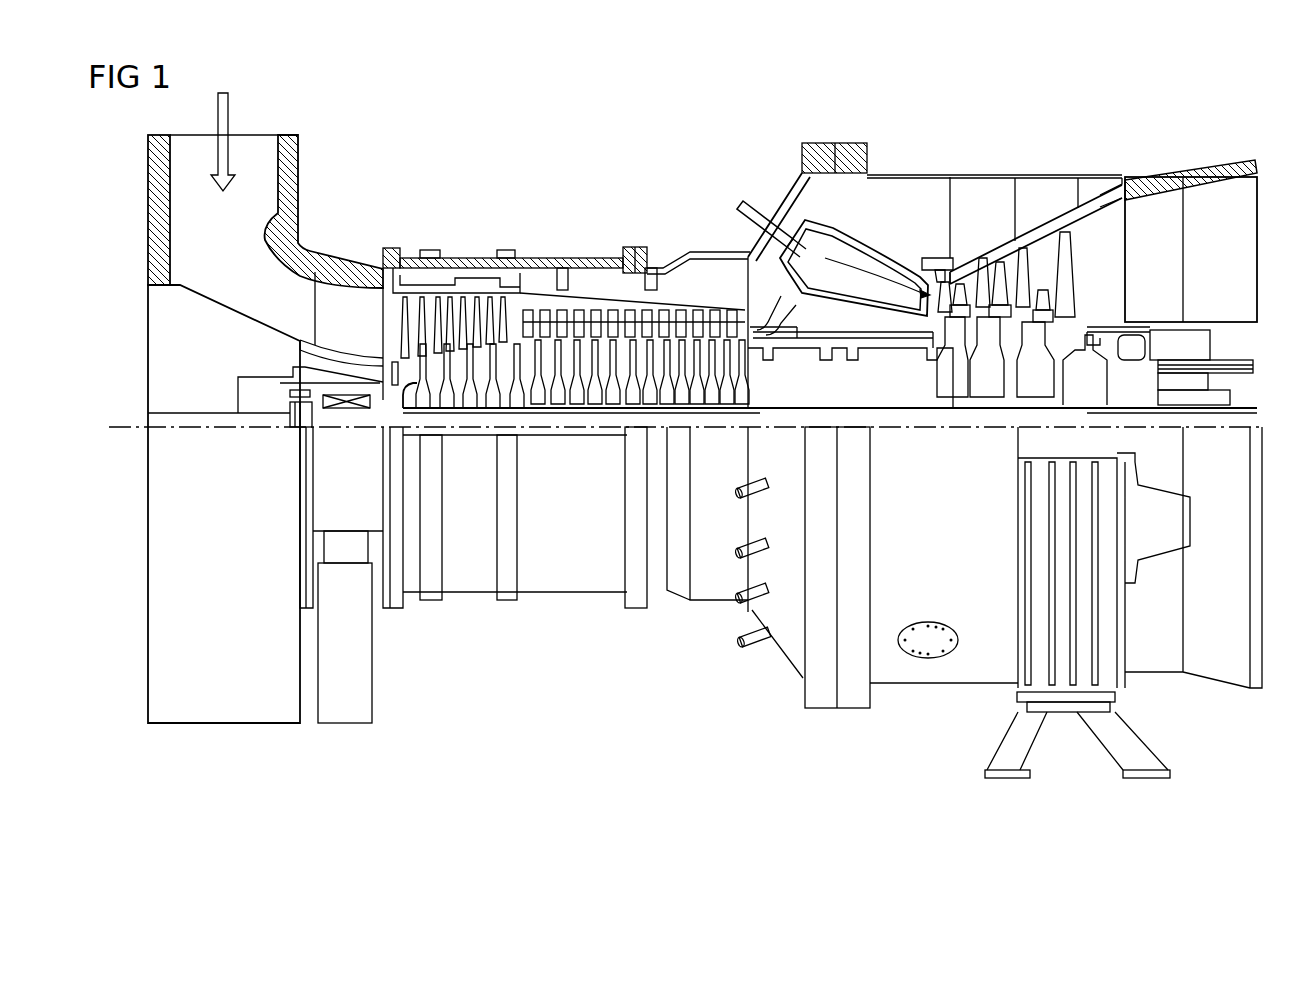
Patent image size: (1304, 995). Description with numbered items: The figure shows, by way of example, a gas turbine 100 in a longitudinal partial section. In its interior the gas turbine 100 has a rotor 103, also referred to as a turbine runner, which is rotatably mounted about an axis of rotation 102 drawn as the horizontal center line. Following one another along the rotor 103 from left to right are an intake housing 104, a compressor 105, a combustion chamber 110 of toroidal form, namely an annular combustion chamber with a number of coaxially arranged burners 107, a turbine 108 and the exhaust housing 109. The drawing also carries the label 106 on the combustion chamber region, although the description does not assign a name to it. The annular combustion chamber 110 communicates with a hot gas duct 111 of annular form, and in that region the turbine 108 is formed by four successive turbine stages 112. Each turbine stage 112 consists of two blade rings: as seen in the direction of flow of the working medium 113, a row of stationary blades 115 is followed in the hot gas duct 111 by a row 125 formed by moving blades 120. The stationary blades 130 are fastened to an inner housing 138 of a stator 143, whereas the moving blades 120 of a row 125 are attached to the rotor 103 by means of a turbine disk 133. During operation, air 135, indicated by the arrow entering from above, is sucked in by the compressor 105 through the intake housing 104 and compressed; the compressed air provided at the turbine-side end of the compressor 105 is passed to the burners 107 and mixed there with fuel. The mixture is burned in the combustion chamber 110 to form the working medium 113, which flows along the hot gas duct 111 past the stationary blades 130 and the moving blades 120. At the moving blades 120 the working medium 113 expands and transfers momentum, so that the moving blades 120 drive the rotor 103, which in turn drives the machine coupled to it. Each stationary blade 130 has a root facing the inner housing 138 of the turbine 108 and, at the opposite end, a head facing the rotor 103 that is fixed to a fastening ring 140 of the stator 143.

The gas turbine 100 is at (575, 132).
The axis of rotation 102 is at (120, 427).
The rotor 103 is at (810, 398).
The intake housing 104 is at (290, 182).
The compressor 105 is at (476, 236).
The combustion chamber 106 is at (905, 262).
The burners 107 is at (748, 213).
The turbine 108 is at (935, 122).
The exhaust housing 109 is at (1163, 180).
The combustion chamber 110 is at (788, 214).
The hot gas duct 111 is at (1098, 243).
The turbine stage 112 is at (1071, 122).
The working medium 113 is at (838, 243).
The row of stationary blades 115 is at (1045, 198).
The moving blades 120 is at (1020, 292).
The row of moving blades 125 is at (1097, 184).
The stationary blades 130 is at (1040, 272).
The turbine disk 133 is at (1075, 385).
The air 135 is at (229, 115).
The inner housing 138 is at (985, 198).
The fastening ring 140 is at (925, 322).
The stator 143 is at (905, 172).